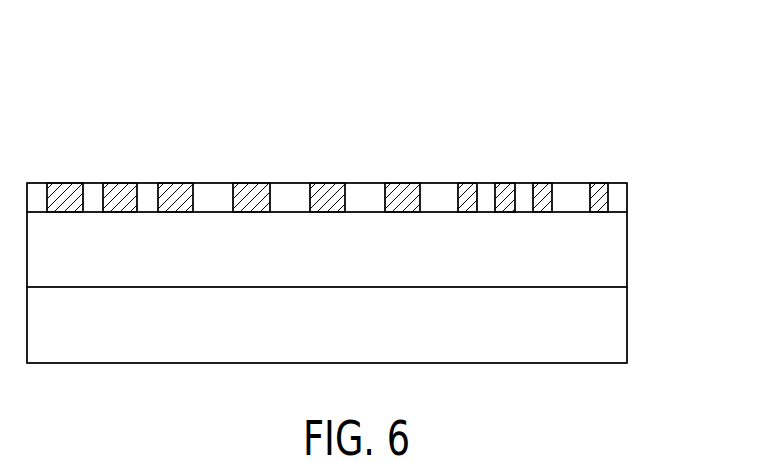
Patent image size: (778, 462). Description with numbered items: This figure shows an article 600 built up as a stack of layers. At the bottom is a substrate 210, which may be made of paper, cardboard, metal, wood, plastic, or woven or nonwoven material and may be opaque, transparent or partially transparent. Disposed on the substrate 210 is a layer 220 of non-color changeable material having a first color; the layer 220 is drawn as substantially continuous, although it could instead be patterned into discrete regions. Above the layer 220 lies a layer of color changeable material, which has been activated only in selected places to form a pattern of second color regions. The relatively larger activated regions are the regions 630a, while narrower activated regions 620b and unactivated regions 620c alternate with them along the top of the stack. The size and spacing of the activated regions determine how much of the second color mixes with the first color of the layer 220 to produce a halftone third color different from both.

The article 600 is at (588, 88).
The layer of non-color changeable material 220 is at (613, 273).
The substrate 210 is at (613, 337).
The non-hatched region of top layer 620c is at (368, 193).
The relatively larger second color regions 630a is at (108, 187).
The narrow hatched region 620b is at (538, 186).